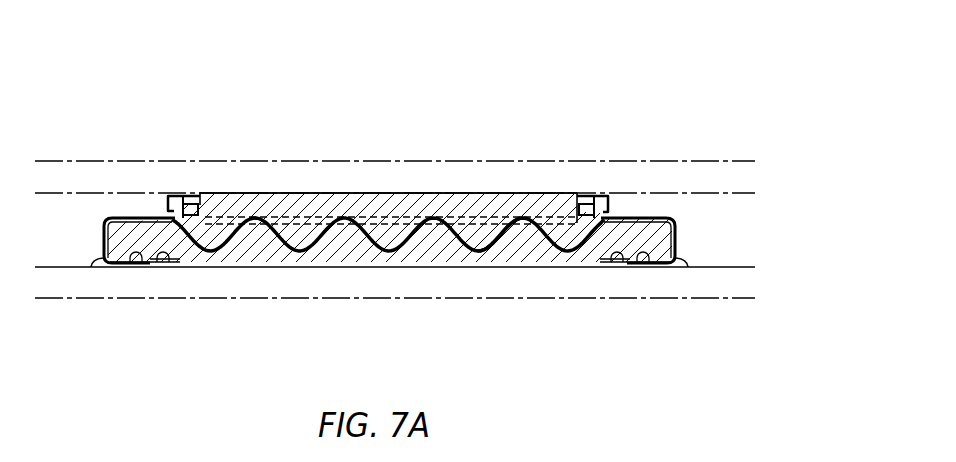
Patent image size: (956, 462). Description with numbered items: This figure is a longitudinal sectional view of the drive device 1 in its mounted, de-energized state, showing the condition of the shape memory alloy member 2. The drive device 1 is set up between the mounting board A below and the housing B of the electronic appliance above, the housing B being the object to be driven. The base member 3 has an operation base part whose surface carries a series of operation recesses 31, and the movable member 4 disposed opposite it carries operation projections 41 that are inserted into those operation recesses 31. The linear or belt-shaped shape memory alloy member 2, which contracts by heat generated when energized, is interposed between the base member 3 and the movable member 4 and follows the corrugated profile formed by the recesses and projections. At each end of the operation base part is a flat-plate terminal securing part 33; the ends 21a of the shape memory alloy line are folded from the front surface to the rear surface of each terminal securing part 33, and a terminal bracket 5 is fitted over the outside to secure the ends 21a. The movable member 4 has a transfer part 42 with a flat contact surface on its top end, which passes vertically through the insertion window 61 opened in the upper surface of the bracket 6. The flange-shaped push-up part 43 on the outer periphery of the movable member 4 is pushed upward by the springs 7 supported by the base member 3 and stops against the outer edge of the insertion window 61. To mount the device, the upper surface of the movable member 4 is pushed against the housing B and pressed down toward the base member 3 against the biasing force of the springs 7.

The drive device 1 is at (277, 192).
The shape memory alloy member 2 is at (346, 216).
The base member 3 is at (417, 266).
The movable member 4 is at (391, 193).
The terminal bracket 5 is at (108, 218).
The bracket 6 is at (611, 192).
The spring 7 is at (317, 217).
The end of shape memory alloy line 21a is at (112, 265).
The operation recess 31 is at (498, 232).
The terminal securing part 33 is at (130, 226).
The operation projection 41 is at (473, 247).
The transfer part 42 is at (461, 195).
The push-up part 43 is at (178, 200).
The insertion window 61 is at (568, 194).
The mounting board A is at (177, 292).
The housing B is at (711, 168).